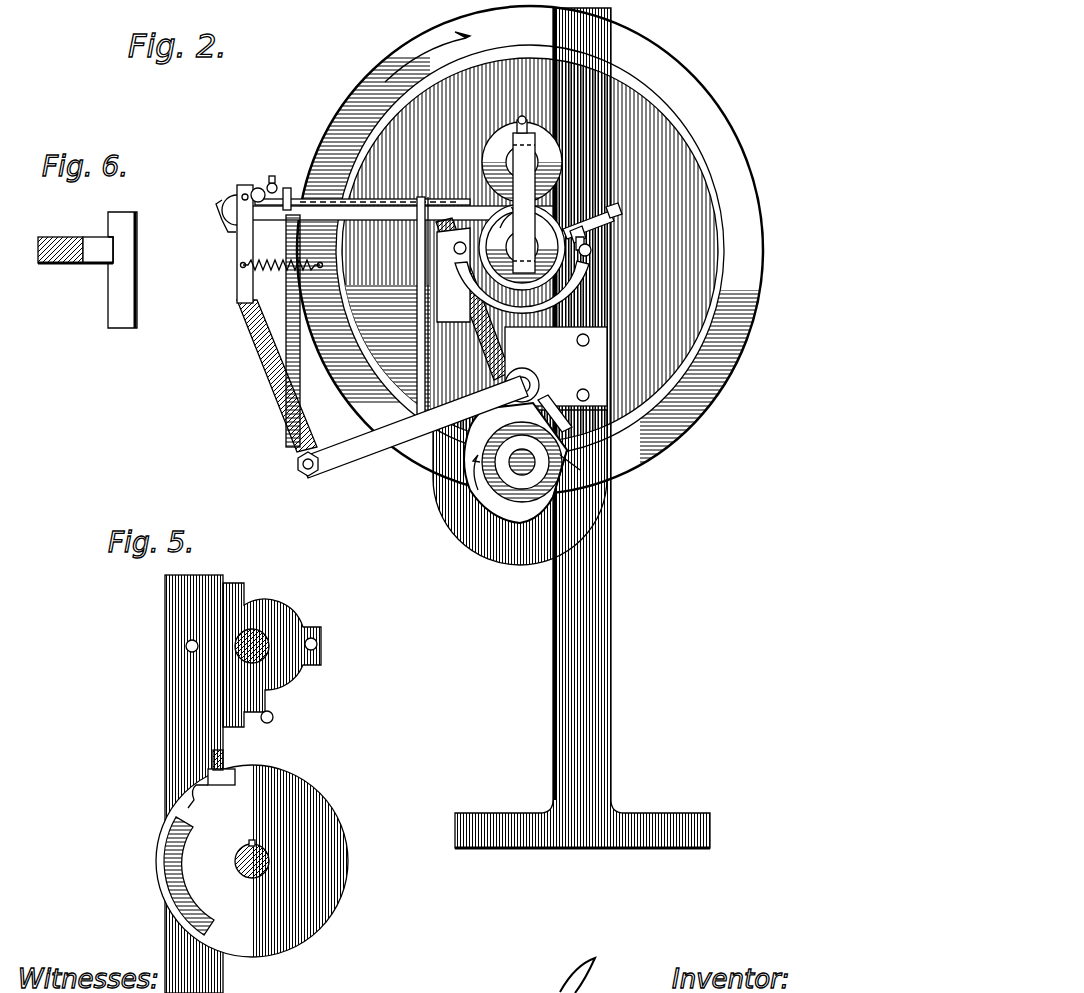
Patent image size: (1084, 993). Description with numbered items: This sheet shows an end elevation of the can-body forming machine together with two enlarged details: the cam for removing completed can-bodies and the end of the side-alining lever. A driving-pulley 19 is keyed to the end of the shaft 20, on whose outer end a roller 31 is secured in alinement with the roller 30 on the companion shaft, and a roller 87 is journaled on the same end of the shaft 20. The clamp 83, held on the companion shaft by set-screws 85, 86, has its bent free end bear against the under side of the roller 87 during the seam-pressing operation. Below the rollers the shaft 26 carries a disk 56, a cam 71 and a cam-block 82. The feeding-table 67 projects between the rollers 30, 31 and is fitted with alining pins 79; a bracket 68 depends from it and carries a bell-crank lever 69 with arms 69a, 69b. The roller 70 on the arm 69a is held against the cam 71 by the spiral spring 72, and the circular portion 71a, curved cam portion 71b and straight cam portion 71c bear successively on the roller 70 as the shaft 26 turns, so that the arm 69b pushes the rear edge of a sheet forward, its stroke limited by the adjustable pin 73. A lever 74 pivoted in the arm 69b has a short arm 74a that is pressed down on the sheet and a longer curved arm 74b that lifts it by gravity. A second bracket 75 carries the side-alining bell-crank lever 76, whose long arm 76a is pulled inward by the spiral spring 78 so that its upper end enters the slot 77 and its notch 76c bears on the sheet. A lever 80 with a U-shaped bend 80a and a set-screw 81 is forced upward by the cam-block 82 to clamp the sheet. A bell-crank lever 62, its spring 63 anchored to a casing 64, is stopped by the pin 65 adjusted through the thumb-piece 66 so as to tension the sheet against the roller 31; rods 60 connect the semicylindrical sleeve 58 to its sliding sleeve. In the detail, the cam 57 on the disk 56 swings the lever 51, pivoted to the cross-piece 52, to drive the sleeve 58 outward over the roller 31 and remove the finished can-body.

In FIG. 2, the driving-pulley 19 is at (748, 232).
In FIG. 2, the spiral spring 78 is at (467, 196).
In FIG. 2, the shaft 20 is at (582, 428).
In FIG. 5, the shaft 20 is at (262, 640).
In FIG. 2, the feeding-table 67 is at (380, 212).
In FIG. 6, the feeding-table 67 is at (60, 237).
In FIG. 2, the pins 79 is at (362, 187).
In FIG. 2, the bell-crank lever 76 is at (418, 340).
In FIG. 2, the bracket 75 is at (470, 352).
In FIG. 2, the thumb-piece 66 is at (462, 255).
In FIG. 2, the roller 87 is at (575, 280).
In FIG. 2, the roller 30 is at (521, 162).
In FIG. 2, the set-screw 85 is at (538, 160).
In FIG. 2, the roller 31 is at (522, 247).
In FIG. 2, the clamp 83 is at (524, 212).
In FIG. 2, the set-screw 86 is at (528, 125).
In FIG. 2, the casing 64 is at (600, 220).
In FIG. 2, the spring 63 is at (615, 210).
In FIG. 2, the pin 65 is at (586, 232).
In FIG. 2, the bell-crank lever 62 is at (586, 242).
In FIG. 2, the rods 60 is at (592, 250).
In FIG. 5, the rods 60 is at (188, 652).
In FIG. 2, the roller 70 is at (530, 375).
In FIG. 2, the lever 80 is at (565, 412).
In FIG. 2, the disk 56 is at (480, 540).
In FIG. 5, the disk 56 is at (318, 780).
In FIG. 2, the cam 71 is at (515, 463).
In FIG. 2, the shaft 26 is at (522, 462).
In FIG. 5, the shaft 26 is at (270, 861).
In FIG. 2, the circular portion 71a is at (470, 470).
In FIG. 2, the curved cam portion 71b is at (565, 480).
In FIG. 2, the straight cam portion 71c is at (560, 420).
In FIG. 2, the cam-block 82 is at (570, 460).
In FIG. 2, the arm 69a is at (350, 462).
In FIG. 2, the bell-crank lever 69 is at (316, 474).
In FIG. 2, the arm 69b is at (272, 362).
In FIG. 2, the bracket 68 is at (304, 331).
In FIG. 2, the lever 74 is at (242, 185).
In FIG. 2, the pin 73 is at (222, 210).
In FIG. 2, the short arm 74a is at (258, 188).
In FIG. 2, the curved arm 74b is at (224, 236).
In FIG. 2, the set-screw 81 is at (272, 176).
In FIG. 2, the U-shaped bend 80a is at (287, 188).
In FIG. 2, the spiral spring 72 is at (282, 276).
In FIG. 6, the long arm 76a is at (137, 292).
In FIG. 6, the slot 77 is at (100, 252).
In FIG. 6, the notch 76c is at (108, 232).
In FIG. 5, the semicylindrical sleeve 58 is at (300, 665).
In FIG. 5, the cam 57 is at (198, 860).
In FIG. 5, the cross-piece 52 is at (232, 768).
In FIG. 5, the lever 51 is at (210, 773).